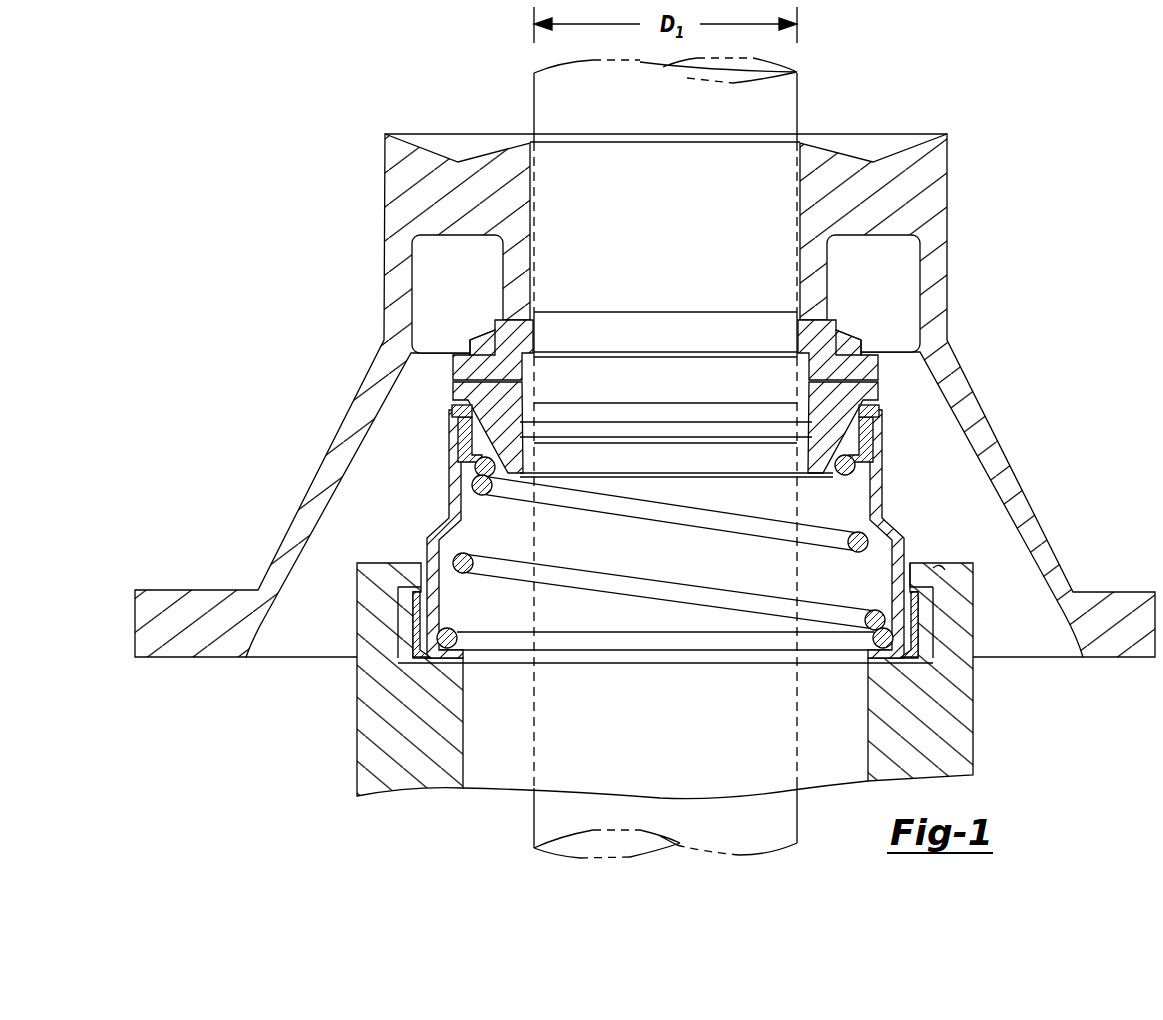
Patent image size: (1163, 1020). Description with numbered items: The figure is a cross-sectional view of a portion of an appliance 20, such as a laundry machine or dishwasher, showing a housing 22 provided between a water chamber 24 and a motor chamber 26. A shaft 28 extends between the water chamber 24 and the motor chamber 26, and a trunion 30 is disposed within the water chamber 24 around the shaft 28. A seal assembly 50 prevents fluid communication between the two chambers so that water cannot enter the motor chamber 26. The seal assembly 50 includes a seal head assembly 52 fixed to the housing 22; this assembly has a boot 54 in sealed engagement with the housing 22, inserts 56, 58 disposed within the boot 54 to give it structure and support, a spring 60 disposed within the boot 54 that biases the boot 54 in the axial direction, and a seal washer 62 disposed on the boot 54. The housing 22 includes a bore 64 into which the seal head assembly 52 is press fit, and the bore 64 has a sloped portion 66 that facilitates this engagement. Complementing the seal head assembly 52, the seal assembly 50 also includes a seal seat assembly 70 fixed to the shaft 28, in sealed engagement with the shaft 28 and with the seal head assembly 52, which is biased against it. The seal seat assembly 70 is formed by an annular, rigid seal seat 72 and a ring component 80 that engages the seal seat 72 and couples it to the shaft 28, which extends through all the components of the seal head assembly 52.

The appliance 20 is at (1042, 198).
The housing 22 is at (958, 715).
The water chamber 24 is at (180, 515).
The motor chamber 26 is at (485, 733).
The shaft 28 is at (803, 103).
The trunion 30 is at (384, 193).
The seal assembly 50 is at (926, 477).
The seal head assembly 52 is at (424, 516).
The boot 54 is at (426, 566).
The insert 56 is at (457, 440).
The insert 58 is at (415, 622).
The spring 60 is at (565, 574).
The seal washer 62 is at (458, 406).
The bore 64 is at (925, 614).
The sloped portion 66 is at (938, 568).
The seal seat assembly 70 is at (490, 298).
The seal seat 72 is at (486, 336).
The ring component 80 is at (522, 328).